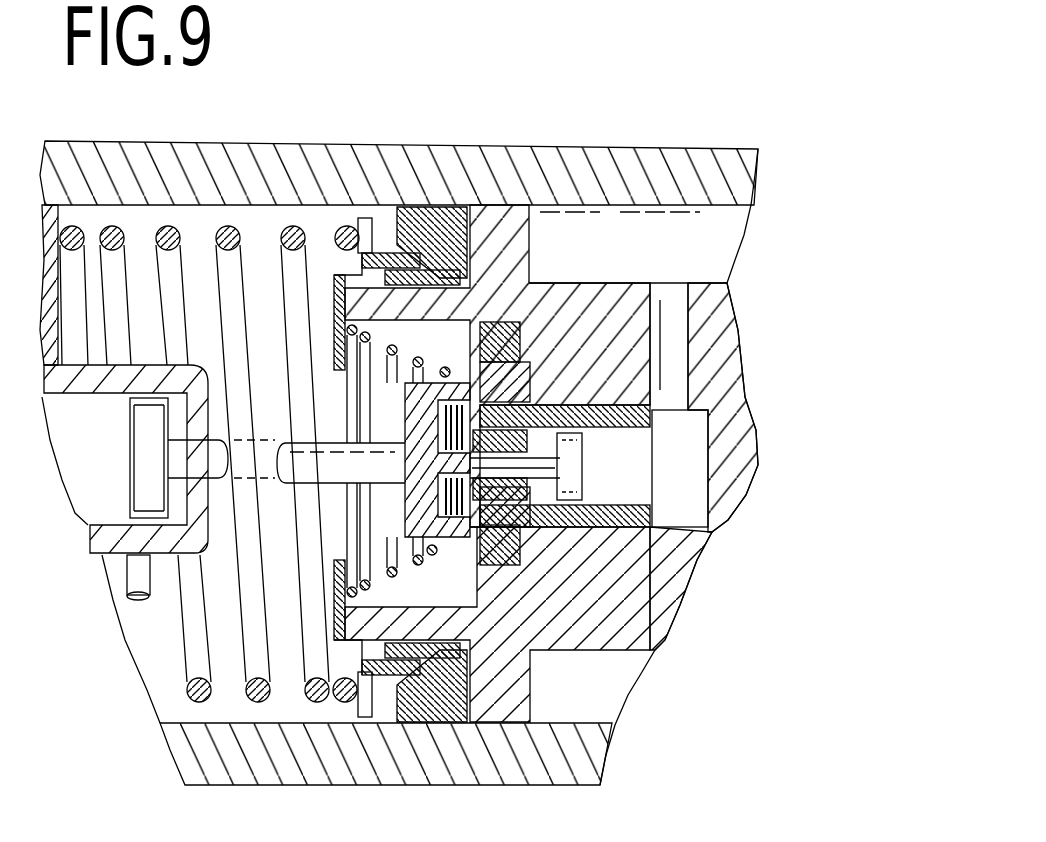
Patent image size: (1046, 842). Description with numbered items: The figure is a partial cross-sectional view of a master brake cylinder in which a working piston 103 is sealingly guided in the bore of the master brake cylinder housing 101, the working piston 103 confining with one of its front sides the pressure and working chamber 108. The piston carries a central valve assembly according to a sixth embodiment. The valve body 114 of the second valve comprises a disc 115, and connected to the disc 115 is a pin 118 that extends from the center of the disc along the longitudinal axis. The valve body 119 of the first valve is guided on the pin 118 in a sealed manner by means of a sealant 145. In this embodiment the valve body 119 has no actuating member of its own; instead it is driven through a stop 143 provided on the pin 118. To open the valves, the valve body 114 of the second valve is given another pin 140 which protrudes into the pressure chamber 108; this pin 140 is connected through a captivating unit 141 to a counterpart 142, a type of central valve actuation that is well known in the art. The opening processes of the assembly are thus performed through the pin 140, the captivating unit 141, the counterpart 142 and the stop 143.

The master brake cylinder housing 101 is at (692, 163).
The working piston 103 is at (508, 244).
The pressure and working chamber 108 is at (276, 236).
The valve body 114 is at (405, 392).
The disc 115 is at (405, 500).
The pin 118 is at (520, 500).
The valve body 119 is at (462, 436).
The pin 140 is at (293, 460).
The captivating unit 141 is at (163, 600).
The counterpart 142 is at (72, 145).
The stop 143 is at (583, 478).
The sealant 145 is at (432, 555).